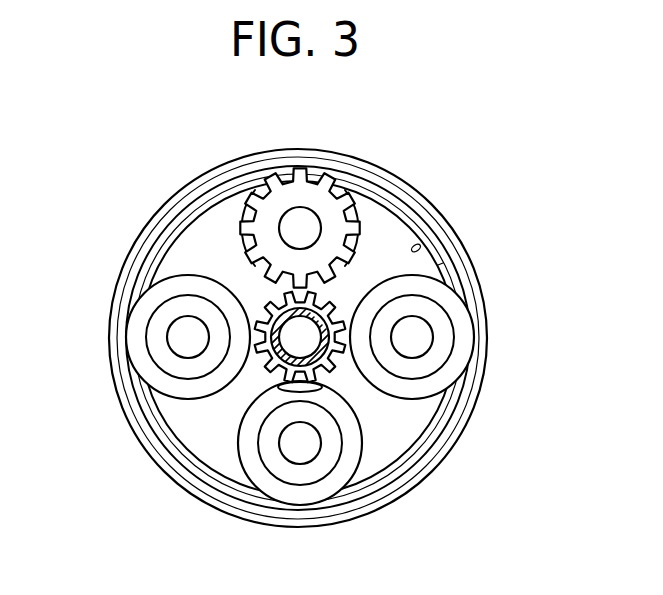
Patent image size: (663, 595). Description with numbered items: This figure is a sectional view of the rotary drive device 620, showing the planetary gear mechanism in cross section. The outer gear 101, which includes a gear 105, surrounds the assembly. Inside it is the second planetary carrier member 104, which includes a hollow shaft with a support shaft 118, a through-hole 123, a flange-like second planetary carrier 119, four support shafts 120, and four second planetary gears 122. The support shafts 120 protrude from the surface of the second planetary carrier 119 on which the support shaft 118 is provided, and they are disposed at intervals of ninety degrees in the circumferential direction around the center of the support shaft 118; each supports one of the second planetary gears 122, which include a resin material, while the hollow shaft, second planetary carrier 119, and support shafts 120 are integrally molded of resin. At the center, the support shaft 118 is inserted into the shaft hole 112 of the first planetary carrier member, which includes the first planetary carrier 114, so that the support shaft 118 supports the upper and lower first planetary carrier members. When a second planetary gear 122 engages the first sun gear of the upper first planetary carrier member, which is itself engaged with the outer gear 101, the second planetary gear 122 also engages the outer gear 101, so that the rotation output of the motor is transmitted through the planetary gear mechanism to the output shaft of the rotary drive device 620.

The rotary drive device 620 is at (112, 159).
The outer gear 101 is at (440, 202).
The second planetary carrier member 104 is at (300, 150).
The gear 105 is at (421, 248).
The shaft hole 112 is at (290, 348).
The first planetary carrier 114 is at (284, 350).
The support shaft 118 is at (280, 350).
The second planetary carrier 119 is at (190, 248).
The support shaft 120 is at (310, 228).
The second planetary gear 122 is at (262, 237).
The through-hole 123 is at (304, 343).